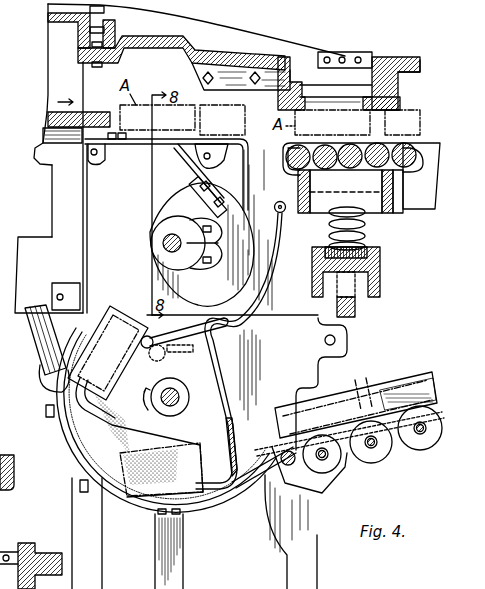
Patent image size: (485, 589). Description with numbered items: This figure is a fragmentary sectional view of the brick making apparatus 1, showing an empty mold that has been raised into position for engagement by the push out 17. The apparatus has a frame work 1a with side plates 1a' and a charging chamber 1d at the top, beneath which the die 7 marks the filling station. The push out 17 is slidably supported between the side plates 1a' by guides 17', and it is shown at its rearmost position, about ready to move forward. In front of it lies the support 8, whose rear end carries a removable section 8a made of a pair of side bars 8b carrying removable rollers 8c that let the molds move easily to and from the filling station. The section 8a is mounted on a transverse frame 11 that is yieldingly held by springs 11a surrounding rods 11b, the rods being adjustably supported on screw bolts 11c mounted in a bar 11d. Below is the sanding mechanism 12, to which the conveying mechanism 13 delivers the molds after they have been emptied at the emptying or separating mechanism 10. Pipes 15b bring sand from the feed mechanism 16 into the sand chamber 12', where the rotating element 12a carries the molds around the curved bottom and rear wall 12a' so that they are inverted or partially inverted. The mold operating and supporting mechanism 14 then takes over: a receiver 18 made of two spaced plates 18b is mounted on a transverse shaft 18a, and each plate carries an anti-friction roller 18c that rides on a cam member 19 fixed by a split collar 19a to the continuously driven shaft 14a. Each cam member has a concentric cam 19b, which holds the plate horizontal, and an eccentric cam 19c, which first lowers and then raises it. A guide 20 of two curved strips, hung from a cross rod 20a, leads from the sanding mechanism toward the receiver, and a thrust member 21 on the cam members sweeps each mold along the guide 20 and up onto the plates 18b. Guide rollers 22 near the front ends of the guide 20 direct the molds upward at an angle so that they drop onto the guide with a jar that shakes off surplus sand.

The brick making apparatus 1 is at (210, 247).
The frame work 1a is at (30, 138).
The side plates 1a' is at (43, 201).
The charging chamber 1d is at (184, 55).
The die 7 is at (350, 97).
The support 8 is at (421, 220).
The removable section 8a is at (420, 140).
The side bars 8b is at (421, 176).
The removable rollers 8c is at (346, 191).
The emptying or separating mechanism 10 is at (285, 366).
The transverse frame 11 is at (297, 186).
The springs 11a is at (366, 230).
The rods 11b is at (368, 247).
The screw bolts 11c is at (357, 300).
The bar 11d is at (383, 284).
The sanding mechanism 12 is at (167, 420).
The sand chamber 12' is at (157, 418).
The rotating element 12a is at (143, 421).
The bottom and rear wall 12a' is at (209, 431).
The conveying mechanism 13 is at (349, 432).
The mold operating and supporting mechanism 14 is at (165, 243).
The shaft 14a is at (154, 233).
The pipes 15b is at (40, 358).
The feed mechanism 16 is at (292, 318).
The push out 17 is at (79, 109).
The guides 17' is at (62, 153).
The receiver 18 is at (231, 148).
The transverse shaft 18a is at (96, 166).
The receiver plates 18b is at (143, 146).
The anti-friction roller 18c is at (220, 142).
The cam member 19 is at (202, 244).
The split collar 19a is at (193, 226).
The cam 19b is at (232, 286).
The cam 19c is at (158, 286).
The guide 20 is at (276, 290).
The cross rod 20a is at (285, 214).
The thrust member 21 is at (182, 166).
The guide devices 22 is at (140, 322).